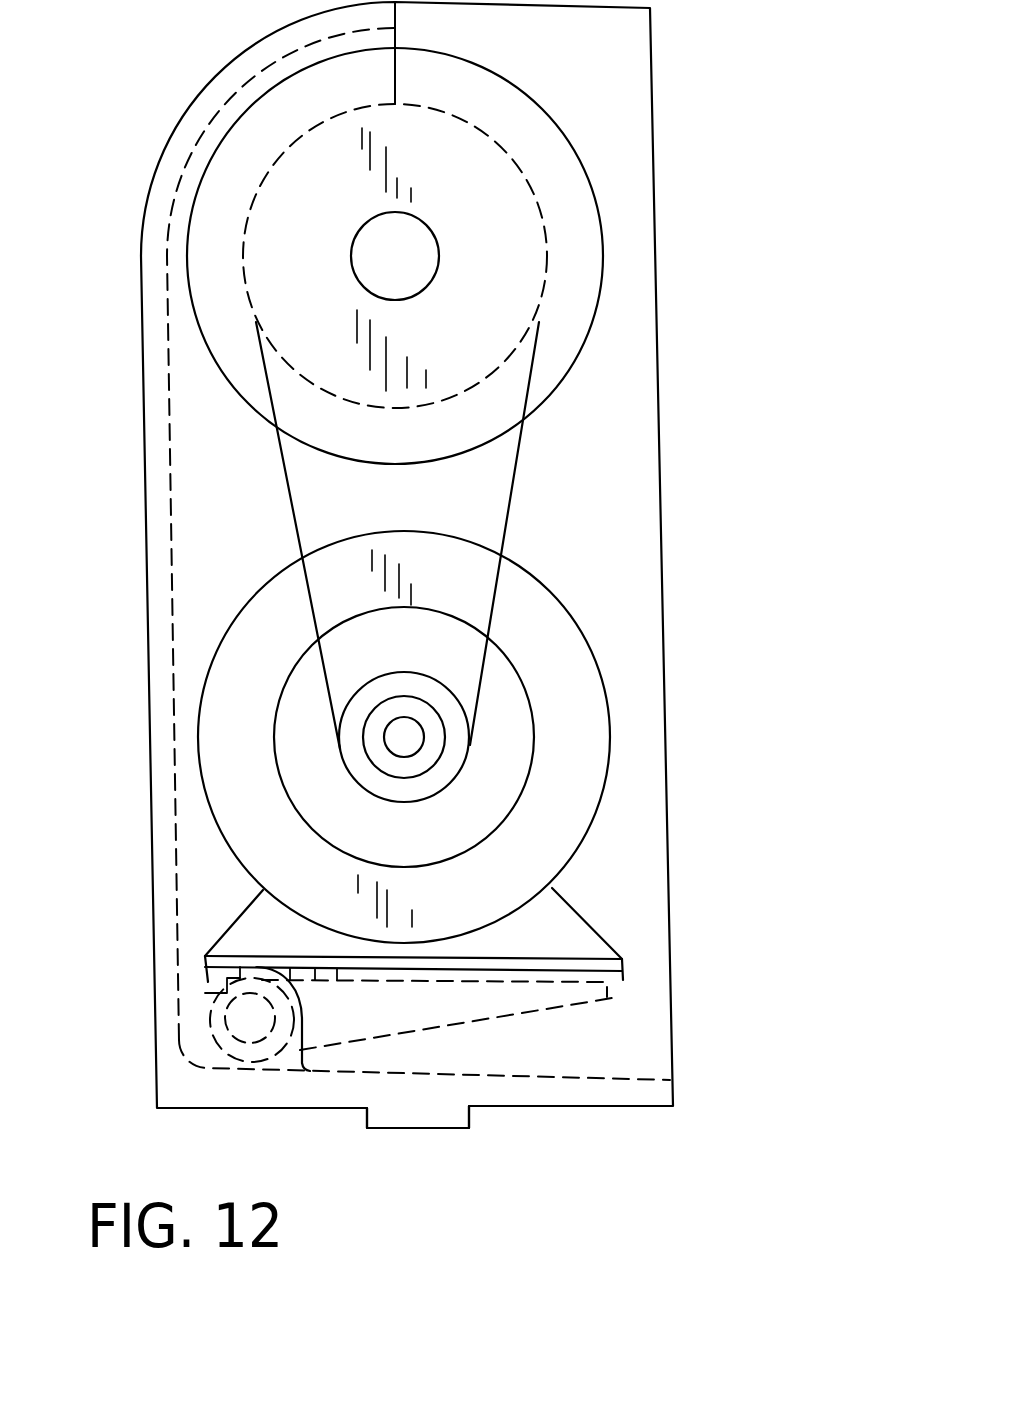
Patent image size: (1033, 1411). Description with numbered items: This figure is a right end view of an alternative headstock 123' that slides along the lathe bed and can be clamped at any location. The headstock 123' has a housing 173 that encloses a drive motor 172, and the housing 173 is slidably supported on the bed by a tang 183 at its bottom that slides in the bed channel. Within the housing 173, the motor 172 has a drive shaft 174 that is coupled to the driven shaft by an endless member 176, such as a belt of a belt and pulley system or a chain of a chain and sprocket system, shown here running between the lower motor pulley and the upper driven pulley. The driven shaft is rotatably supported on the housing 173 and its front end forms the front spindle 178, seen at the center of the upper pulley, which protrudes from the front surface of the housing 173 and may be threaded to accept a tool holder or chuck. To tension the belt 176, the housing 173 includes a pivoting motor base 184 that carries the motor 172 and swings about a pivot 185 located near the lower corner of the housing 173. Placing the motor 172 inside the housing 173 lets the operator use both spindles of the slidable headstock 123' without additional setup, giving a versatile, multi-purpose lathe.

The headstock 123' is at (858, 305).
The housing 173 is at (657, 265).
The front spindle 178 is at (382, 244).
The endless member 176 is at (512, 495).
The drive motor 172 is at (608, 697).
The drive shaft 174 is at (340, 749).
The pivot 185 is at (237, 1018).
The pivoting motor base 184 is at (568, 996).
The tang 183 is at (412, 1118).